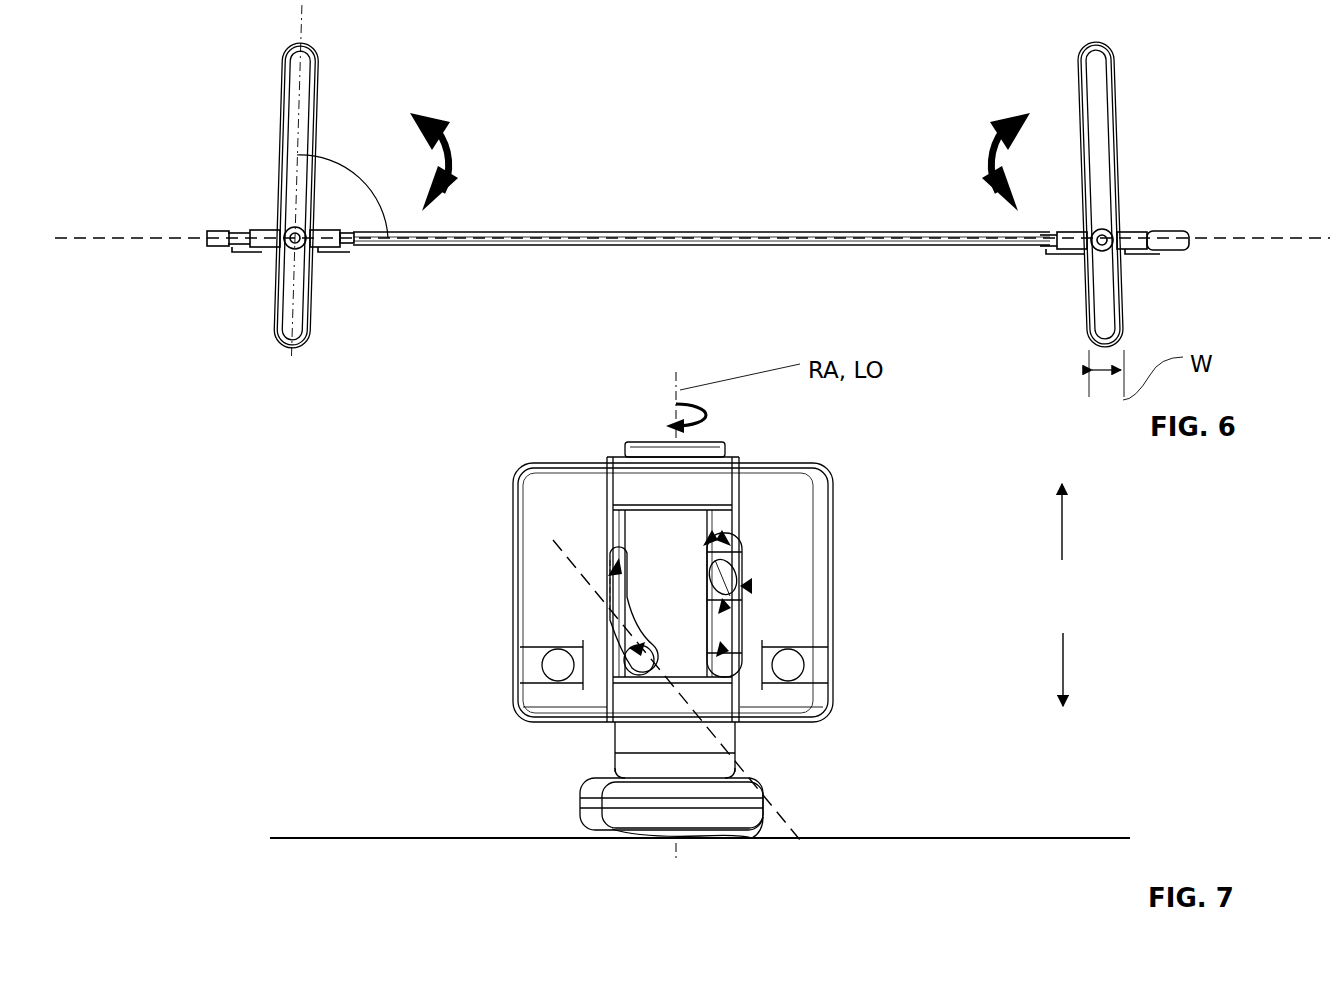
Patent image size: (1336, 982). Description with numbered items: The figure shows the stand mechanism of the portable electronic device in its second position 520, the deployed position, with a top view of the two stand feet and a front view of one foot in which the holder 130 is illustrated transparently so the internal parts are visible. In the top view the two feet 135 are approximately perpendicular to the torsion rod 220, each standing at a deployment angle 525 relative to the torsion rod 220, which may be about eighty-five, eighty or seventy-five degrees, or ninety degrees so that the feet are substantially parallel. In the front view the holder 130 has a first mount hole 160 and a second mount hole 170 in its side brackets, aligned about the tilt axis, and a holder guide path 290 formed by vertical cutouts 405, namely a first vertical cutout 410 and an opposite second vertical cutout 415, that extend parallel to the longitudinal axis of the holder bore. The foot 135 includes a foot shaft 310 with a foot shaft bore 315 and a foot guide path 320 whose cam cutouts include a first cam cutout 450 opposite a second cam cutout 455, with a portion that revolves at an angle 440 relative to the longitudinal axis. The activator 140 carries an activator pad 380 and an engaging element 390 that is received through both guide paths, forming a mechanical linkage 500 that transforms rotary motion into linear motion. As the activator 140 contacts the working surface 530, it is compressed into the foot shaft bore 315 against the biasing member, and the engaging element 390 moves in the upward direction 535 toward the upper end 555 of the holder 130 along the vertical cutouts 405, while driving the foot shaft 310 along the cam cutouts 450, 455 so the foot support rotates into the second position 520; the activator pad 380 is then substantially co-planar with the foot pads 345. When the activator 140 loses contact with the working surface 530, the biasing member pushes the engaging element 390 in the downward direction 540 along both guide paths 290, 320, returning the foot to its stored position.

In FIG. 6, the second position 520 is at (244, 118).
In FIG. 7, the second position 520 is at (350, 490).
In FIG. 6, the foot 135 is at (282, 193).
In FIG. 6, the torsion rod 220 is at (640, 232).
In FIG. 6, the deployment angle 525 is at (345, 167).
In FIG. 7, the holder 130 is at (592, 505).
In FIG. 7, the upper end 555 is at (580, 462).
In FIG. 7, the first cam cutout 450 is at (705, 543).
In FIG. 7, the holder guide path 290 is at (743, 717).
In FIG. 7, the foot shaft 310 is at (645, 617).
In FIG. 7, the second vertical cutout 415 is at (608, 574).
In FIG. 7, the foot guide path 320 is at (640, 640).
In FIG. 7, the second cam cutout 455 is at (635, 660).
In FIG. 7, the second mount hole 170 is at (524, 668).
In FIG. 7, the first mount hole 160 is at (818, 668).
In FIG. 7, the mechanical linkage 500 is at (752, 586).
In FIG. 7, the engaging element 390 is at (733, 573).
In FIG. 7, the first vertical cutout 410 is at (731, 544).
In FIG. 7, the foot shaft bore 315 is at (720, 612).
In FIG. 7, the vertical cutouts 405 is at (735, 700).
In FIG. 7, the activator 140 is at (580, 800).
In FIG. 7, the foot pads 345 is at (603, 836).
In FIG. 7, the activator pad 380 is at (712, 848).
In FIG. 7, the angle 440 is at (800, 840).
In FIG. 7, the working surface 530 is at (1090, 838).
In FIG. 7, the upward direction 535 is at (1064, 540).
In FIG. 7, the downward direction 540 is at (1064, 667).